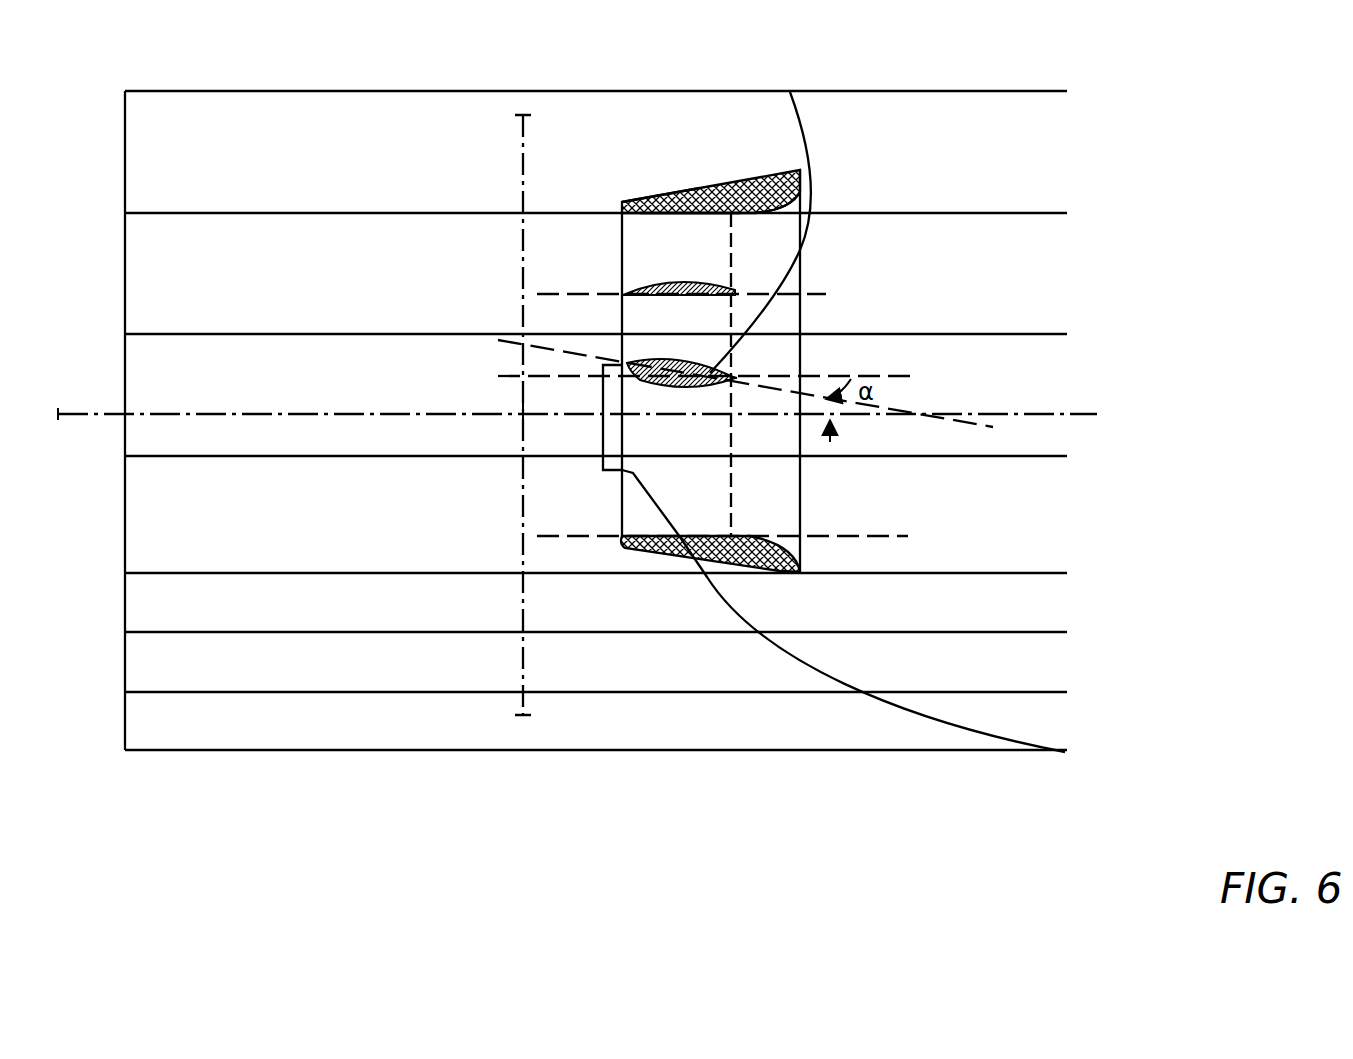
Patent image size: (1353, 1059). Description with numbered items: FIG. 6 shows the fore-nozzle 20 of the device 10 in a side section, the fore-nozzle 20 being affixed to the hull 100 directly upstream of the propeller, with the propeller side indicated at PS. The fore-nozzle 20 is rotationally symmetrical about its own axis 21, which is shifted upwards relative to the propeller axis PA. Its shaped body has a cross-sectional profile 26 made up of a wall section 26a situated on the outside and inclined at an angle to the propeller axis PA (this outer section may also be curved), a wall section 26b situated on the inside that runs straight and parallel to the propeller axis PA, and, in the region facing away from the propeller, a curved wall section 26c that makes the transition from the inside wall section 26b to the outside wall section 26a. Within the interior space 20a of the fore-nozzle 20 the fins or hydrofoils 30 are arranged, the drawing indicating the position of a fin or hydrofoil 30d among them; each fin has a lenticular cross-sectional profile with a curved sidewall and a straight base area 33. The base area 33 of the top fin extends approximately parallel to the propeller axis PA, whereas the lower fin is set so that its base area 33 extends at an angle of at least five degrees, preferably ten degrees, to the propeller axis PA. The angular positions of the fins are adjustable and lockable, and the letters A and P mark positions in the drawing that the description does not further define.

The hull 100 is at (857, 140).
The device 10 is at (675, 188).
The fore-nozzle 20 is at (745, 180).
The interior space 20a is at (700, 266).
The axis 21 is at (893, 372).
The cross-sectional profile 26 is at (712, 196).
The outside wall section 26a is at (652, 200).
The inside wall section 26b is at (692, 215).
The curved wall section 26c is at (775, 210).
The fin or hydrofoil 30 is at (688, 362).
The fin or hydrofoil 30d is at (700, 377).
The straight base area 33 is at (703, 297).
The propeller axis PA is at (66, 412).
The propeller side PS is at (540, 418).
The axis A is at (97, 747).
The point P is at (139, 743).